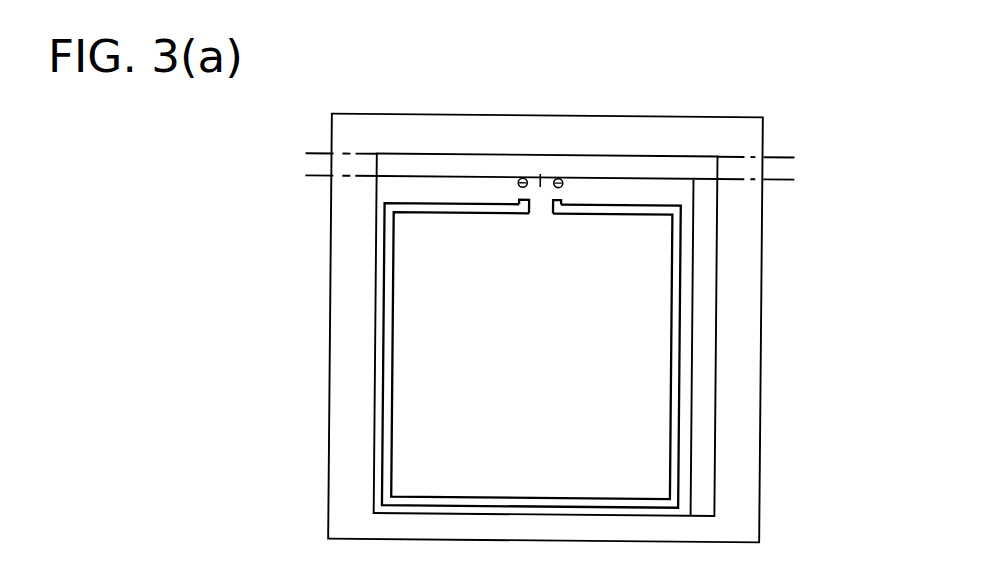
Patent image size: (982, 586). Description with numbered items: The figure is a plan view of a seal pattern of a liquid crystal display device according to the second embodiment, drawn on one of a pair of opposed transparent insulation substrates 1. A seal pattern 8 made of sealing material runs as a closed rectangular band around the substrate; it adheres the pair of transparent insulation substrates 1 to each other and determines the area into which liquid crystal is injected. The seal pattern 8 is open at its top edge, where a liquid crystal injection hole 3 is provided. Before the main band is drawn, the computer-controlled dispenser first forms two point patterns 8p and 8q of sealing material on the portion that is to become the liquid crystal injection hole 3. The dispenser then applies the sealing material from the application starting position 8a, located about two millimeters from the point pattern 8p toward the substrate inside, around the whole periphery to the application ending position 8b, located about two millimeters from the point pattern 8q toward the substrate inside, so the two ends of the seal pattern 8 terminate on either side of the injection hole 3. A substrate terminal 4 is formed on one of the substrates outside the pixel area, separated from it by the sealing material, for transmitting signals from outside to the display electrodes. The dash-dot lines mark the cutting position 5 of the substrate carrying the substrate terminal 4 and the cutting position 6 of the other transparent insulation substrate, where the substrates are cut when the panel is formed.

The transparent insulation substrates 1 is at (738, 328).
The liquid crystal injection hole 3 is at (540, 174).
The substrate terminal 4 is at (659, 168).
The cutting position of the transparent insulation substrate on which the substrate 5 is at (782, 157).
The cutting position of the other transparent insulation substrate 6 is at (782, 180).
The seal pattern 8 is at (677, 267).
The sealing material application starting position 8a is at (533, 210).
The application ending position 8b is at (551, 214).
The point pattern 8p is at (517, 183).
The point pattern 8q is at (562, 183).